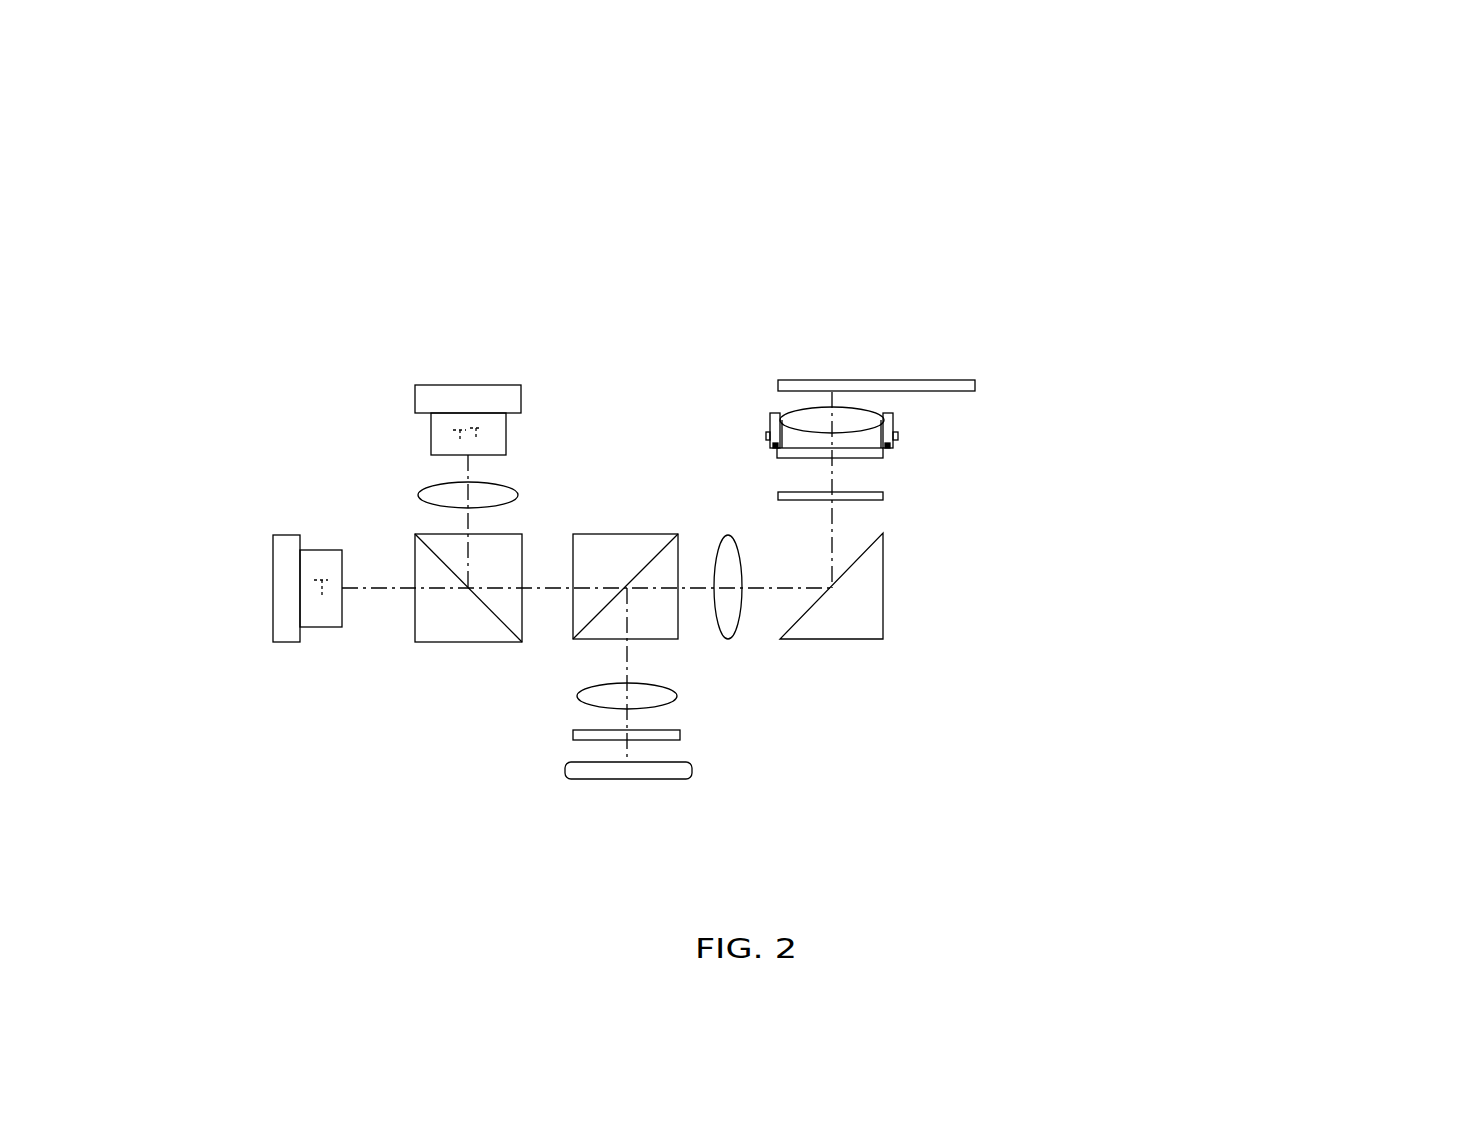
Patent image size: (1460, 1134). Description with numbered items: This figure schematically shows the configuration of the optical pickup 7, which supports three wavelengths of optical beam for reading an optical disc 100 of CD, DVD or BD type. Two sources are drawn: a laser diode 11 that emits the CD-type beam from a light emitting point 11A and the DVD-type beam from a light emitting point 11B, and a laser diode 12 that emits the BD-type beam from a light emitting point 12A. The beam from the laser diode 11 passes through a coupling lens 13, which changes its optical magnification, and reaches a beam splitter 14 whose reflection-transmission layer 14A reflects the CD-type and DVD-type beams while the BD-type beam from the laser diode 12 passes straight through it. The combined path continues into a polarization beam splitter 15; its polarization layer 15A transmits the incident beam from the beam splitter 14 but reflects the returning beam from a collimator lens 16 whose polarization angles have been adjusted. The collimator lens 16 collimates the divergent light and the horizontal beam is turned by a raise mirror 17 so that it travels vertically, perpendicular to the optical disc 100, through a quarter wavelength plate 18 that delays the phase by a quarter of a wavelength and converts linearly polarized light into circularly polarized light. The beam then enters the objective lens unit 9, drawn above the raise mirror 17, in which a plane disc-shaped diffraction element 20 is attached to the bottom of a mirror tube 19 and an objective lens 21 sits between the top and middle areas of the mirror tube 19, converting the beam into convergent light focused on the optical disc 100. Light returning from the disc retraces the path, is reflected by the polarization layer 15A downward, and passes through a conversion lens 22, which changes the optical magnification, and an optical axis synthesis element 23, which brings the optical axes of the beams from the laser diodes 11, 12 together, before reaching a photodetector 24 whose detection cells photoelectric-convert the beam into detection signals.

The optical pickup 7 is at (178, 178).
The objective lens unit 9 is at (1103, 463).
The laser diode 11 is at (448, 385).
The light emitting point 11A is at (484, 430).
The light emitting point 11B is at (452, 432).
The laser diode 12 is at (273, 588).
The light emitting point 12A is at (320, 600).
The coupling lens 13 is at (418, 495).
The beam splitter 14 is at (417, 643).
The reflection-transmission layer 14A is at (505, 641).
The polarization beam splitter 15 is at (623, 533).
The polarization layer 15A is at (655, 563).
The collimator lens 16 is at (737, 638).
The raise mirror 17 is at (885, 607).
The quarter wavelength plate 18 is at (885, 498).
The mirror tube 19 is at (898, 436).
The diffraction element 20 is at (887, 455).
The objective lens 21 is at (877, 405).
The conversion lens 22 is at (677, 697).
The optical axis synthesis element 23 is at (680, 737).
The photodetector 24 is at (692, 768).
The optical disc 100 is at (800, 380).